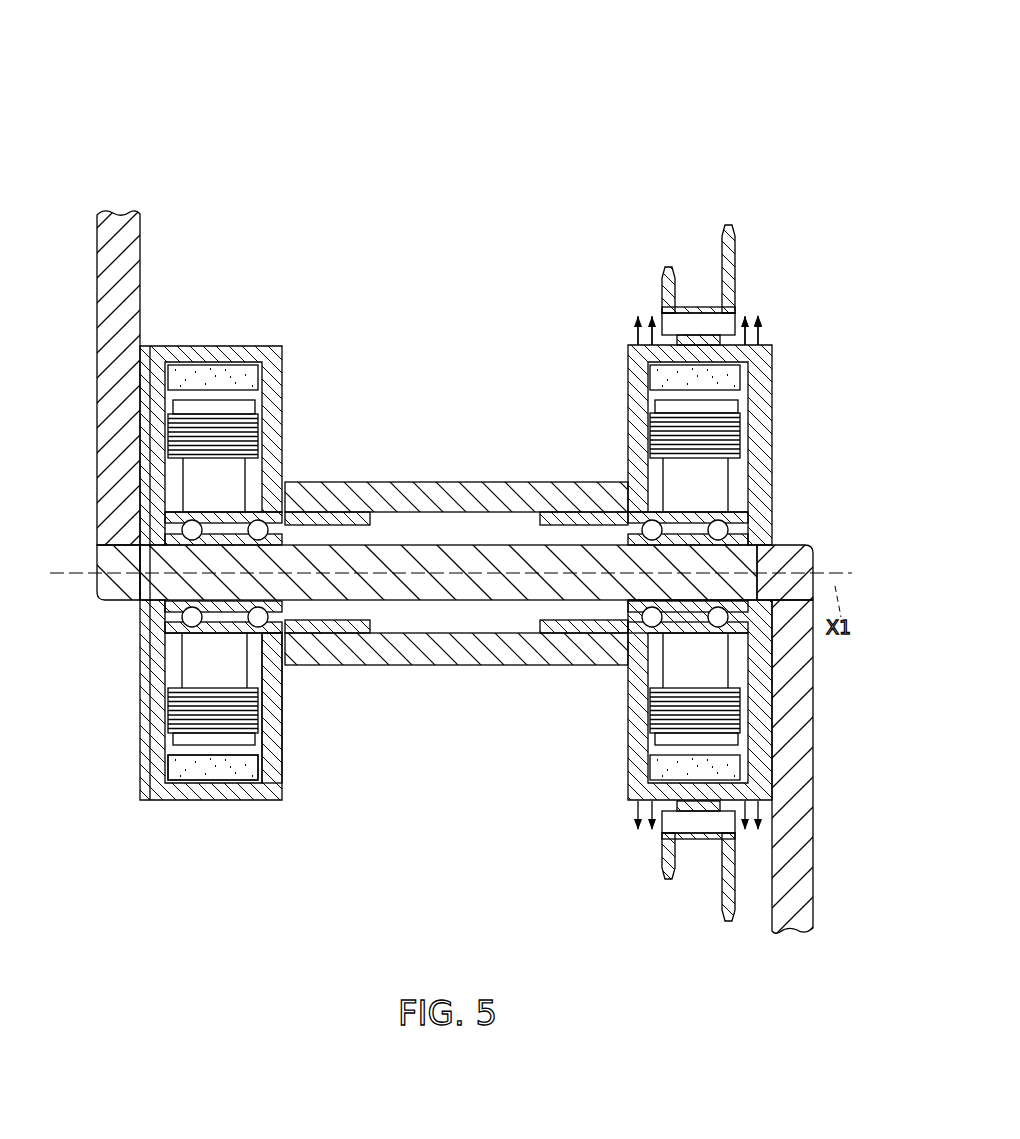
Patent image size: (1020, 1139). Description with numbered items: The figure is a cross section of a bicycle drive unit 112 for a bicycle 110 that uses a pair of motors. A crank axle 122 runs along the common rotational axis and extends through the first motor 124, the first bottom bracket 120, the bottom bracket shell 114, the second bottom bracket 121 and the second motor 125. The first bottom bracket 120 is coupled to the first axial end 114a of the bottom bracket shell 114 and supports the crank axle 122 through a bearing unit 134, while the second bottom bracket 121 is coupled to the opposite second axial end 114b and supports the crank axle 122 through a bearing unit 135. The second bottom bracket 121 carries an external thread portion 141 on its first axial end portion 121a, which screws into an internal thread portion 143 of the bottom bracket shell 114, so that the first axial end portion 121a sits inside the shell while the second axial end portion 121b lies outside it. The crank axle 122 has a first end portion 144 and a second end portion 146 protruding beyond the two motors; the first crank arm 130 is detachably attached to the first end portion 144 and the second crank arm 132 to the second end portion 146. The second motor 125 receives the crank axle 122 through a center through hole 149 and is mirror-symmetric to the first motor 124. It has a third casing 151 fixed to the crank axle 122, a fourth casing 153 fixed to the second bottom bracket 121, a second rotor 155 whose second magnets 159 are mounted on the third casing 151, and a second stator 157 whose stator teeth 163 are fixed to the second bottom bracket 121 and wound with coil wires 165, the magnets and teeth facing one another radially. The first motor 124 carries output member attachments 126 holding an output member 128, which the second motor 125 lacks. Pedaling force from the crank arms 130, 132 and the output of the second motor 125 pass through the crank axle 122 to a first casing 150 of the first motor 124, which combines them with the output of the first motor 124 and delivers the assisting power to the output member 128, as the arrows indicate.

The bicycle 110 is at (668, 128).
The bicycle drive unit 112 is at (587, 195).
The bottom bracket shell 114 is at (448, 480).
The first axial end 114a is at (578, 495).
The second axial end 114b is at (320, 495).
The first bottom bracket 120 is at (572, 640).
The second bottom bracket 121 is at (364, 640).
The first axial end portion 121a is at (347, 516).
The second axial end portion 121b is at (235, 512).
The crank axle 122 is at (470, 603).
The first motor 124 is at (614, 349).
The second motor 125 is at (302, 347).
The output member attachments 126 is at (705, 299).
The output member 128 is at (693, 240).
The first crank arm 130 is at (820, 893).
The second crank arm 132 is at (95, 368).
The bearing unit 134 is at (619, 536).
The bearing unit 135 is at (294, 612).
The external thread portion 141 is at (335, 637).
The internal thread portion 143 is at (350, 625).
The first end portion 144 is at (797, 545).
The second end portion 146 is at (102, 562).
The center through hole 149 is at (401, 626).
The first casing 150 is at (777, 410).
The third casing 151 is at (133, 762).
The fourth casing 153 is at (286, 748).
The second rotor 155 is at (264, 396).
The second stator 157 is at (182, 753).
The second magnets 159 is at (243, 375).
The stator teeth 163 is at (200, 665).
The coil wires 165 is at (185, 713).